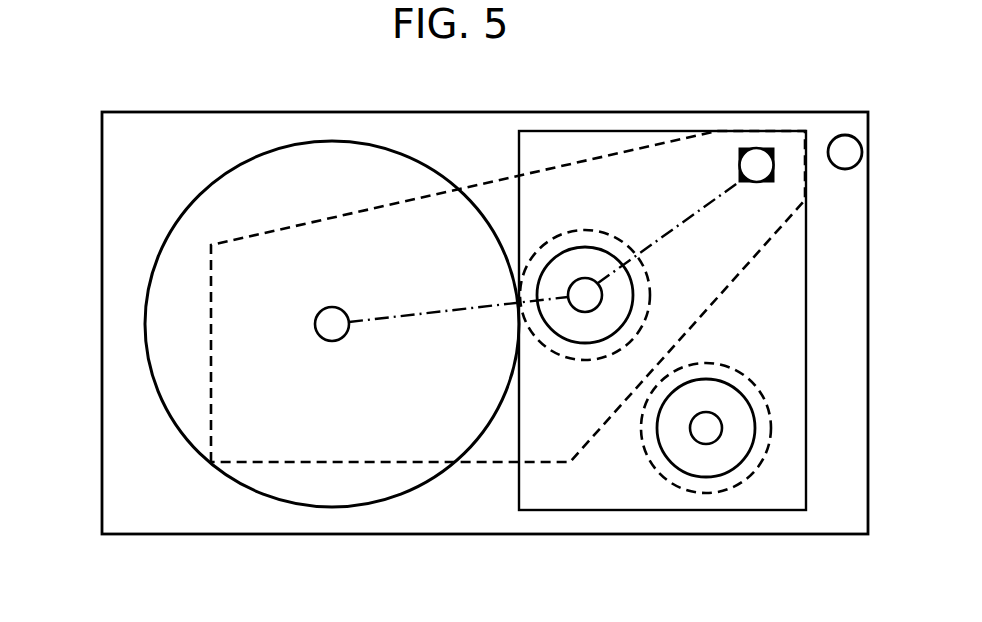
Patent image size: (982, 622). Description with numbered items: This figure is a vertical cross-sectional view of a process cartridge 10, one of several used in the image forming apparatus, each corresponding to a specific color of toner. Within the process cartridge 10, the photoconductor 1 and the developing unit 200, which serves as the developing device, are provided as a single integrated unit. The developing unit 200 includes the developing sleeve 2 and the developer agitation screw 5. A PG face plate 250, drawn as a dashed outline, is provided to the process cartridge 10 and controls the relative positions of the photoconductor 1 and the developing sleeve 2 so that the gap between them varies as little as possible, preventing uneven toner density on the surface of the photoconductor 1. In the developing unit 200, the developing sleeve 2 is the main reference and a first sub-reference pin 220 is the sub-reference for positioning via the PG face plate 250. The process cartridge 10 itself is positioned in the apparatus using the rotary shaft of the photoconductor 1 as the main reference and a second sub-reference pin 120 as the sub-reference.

The process cartridge 10 is at (78, 87).
The photoconductor 1 is at (209, 189).
The developing sleeve 2 is at (598, 232).
The developer agitation screw 5 is at (718, 364).
The first sub-reference pin 220 is at (757, 184).
The second sub-reference pin 120 is at (843, 171).
The PG face plate 250 is at (470, 466).
The developing unit 200 is at (661, 518).